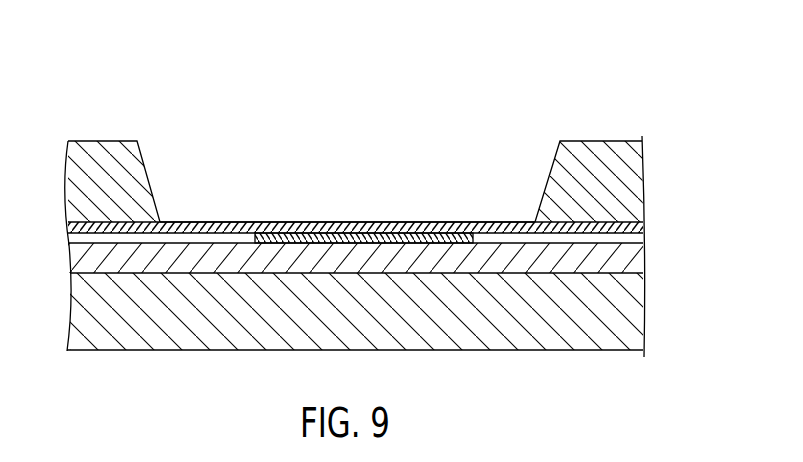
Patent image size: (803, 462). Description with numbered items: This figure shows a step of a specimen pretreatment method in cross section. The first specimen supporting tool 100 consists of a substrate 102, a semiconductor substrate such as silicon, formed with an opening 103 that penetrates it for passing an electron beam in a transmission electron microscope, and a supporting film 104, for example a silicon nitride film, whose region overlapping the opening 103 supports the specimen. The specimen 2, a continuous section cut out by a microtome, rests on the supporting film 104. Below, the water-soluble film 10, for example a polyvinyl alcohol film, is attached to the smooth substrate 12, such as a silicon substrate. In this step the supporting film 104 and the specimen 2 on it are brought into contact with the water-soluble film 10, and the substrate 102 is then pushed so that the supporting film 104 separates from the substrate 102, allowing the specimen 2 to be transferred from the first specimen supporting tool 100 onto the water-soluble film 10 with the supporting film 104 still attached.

The first specimen supporting tool 100 is at (382, 200).
The substrate 102 is at (627, 186).
The opening 103 is at (351, 137).
The supporting film 104 is at (637, 228).
The specimen 2 is at (404, 222).
The water-soluble film 10 is at (626, 261).
The smooth substrate 12 is at (632, 323).